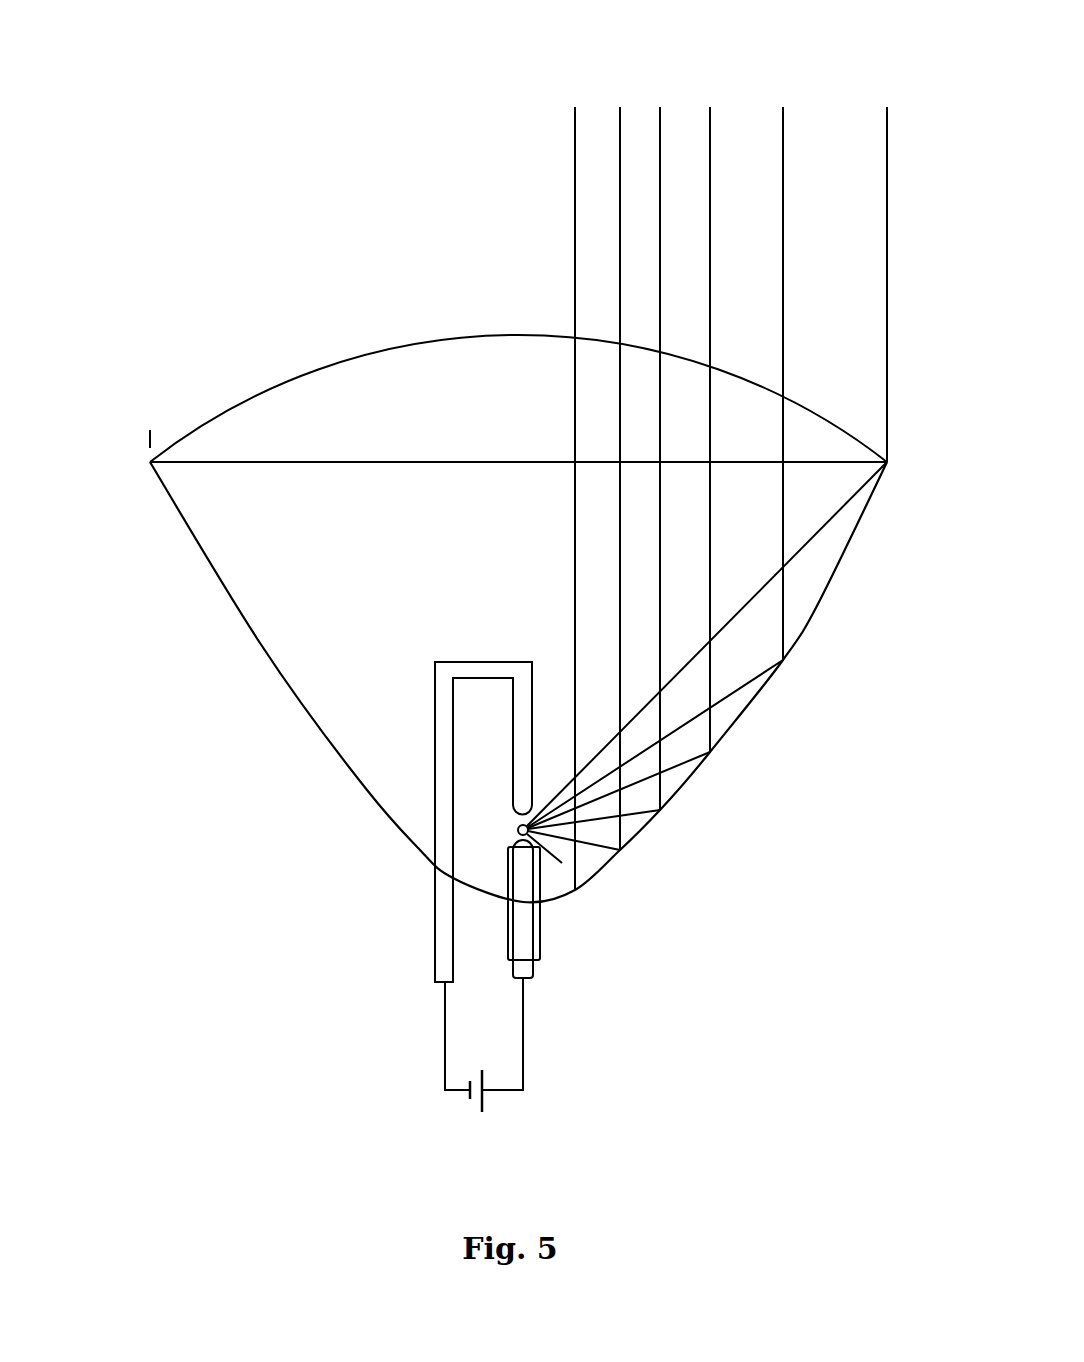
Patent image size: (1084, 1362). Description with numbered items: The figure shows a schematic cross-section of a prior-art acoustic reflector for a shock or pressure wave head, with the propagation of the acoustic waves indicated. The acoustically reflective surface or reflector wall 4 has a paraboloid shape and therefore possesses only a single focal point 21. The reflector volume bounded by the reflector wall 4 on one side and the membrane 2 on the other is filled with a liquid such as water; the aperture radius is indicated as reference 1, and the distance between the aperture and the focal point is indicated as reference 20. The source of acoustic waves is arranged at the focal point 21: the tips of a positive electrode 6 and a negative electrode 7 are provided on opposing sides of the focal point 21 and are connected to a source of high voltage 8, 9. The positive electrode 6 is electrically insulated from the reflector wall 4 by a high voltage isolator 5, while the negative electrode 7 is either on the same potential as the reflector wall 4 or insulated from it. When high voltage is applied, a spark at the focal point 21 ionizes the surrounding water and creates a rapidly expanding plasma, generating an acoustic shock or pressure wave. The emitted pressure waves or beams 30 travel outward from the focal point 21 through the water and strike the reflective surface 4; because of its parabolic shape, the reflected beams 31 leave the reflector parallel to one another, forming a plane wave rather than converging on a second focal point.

The aperture radius 1 is at (153, 438).
The membrane 2 is at (380, 348).
The acoustically reflective surface 4 is at (258, 645).
The high voltage isolator 5 is at (541, 950).
The positive electrode 6 is at (533, 982).
The negative electrode 7 is at (435, 960).
The source of high voltage 8 is at (485, 1094).
The source of high voltage 9 is at (468, 1094).
The distance between aperture and focal point 20 is at (504, 465).
The focal point 21 is at (508, 839).
The emitted pressure waves or beams 30 is at (840, 515).
The reflected beams 31 is at (565, 107).